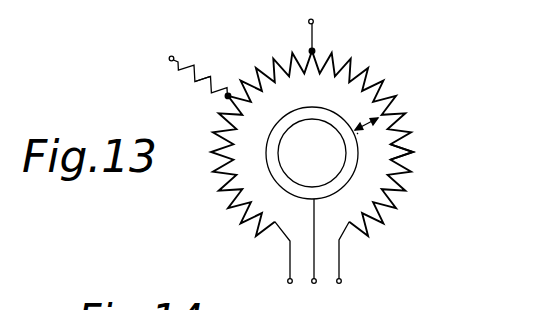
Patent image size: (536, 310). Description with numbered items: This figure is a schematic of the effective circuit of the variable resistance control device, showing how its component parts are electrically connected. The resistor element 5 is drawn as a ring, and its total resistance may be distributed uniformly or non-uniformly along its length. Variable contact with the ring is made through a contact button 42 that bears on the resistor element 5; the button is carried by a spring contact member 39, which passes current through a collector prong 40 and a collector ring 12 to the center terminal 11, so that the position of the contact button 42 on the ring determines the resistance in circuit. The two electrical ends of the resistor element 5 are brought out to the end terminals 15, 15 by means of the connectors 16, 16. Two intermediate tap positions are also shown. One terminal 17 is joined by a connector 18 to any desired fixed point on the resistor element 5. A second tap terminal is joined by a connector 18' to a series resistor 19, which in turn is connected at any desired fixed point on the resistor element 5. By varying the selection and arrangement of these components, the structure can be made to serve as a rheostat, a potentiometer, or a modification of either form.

The resistor element 5 is at (385, 81).
The center terminal 11 is at (314, 283).
The collector ring 12 is at (280, 175).
The end terminal 15 is at (288, 283).
The connector 16 is at (289, 261).
The terminal 17 is at (308, 21).
The connector 18 is at (330, 32).
The connector 18' is at (201, 57).
The series resistor 19 is at (201, 63).
The spring contact member 39 is at (366, 124).
The collector prong 40 is at (358, 136).
The contact button 42 is at (407, 142).